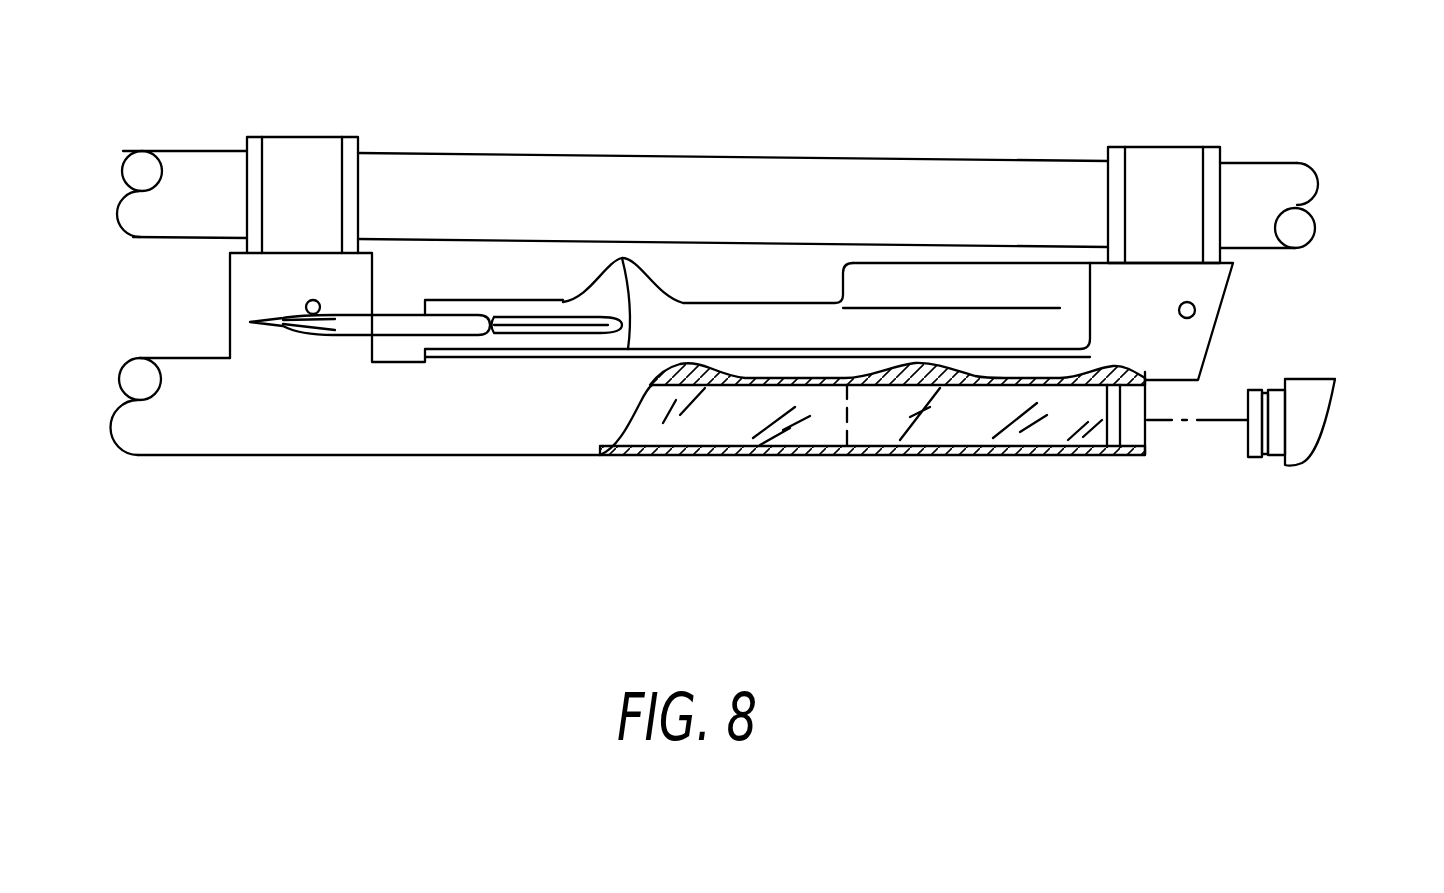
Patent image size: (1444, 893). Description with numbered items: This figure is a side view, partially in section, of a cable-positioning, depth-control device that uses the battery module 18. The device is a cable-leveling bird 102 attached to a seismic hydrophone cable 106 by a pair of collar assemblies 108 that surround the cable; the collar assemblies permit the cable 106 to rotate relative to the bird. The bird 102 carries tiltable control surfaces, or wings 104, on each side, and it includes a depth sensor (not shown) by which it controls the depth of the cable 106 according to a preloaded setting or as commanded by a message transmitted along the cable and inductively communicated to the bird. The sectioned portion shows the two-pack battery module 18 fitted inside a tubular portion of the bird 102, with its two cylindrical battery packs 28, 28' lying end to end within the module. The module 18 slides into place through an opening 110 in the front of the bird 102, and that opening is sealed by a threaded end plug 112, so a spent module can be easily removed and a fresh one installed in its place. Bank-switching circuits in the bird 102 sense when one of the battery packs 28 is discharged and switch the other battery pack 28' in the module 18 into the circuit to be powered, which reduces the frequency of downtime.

The battery module 18 is at (1042, 460).
The battery pack 28 is at (897, 449).
The battery pack 28' is at (689, 460).
The cable-leveling bird 102 is at (1210, 302).
The wings 104 is at (533, 302).
The seismic hydrophone cable 106 is at (713, 160).
The collar assemblies 108 is at (305, 148).
The opening 110 is at (1147, 442).
The threaded end plug 112 is at (1297, 453).